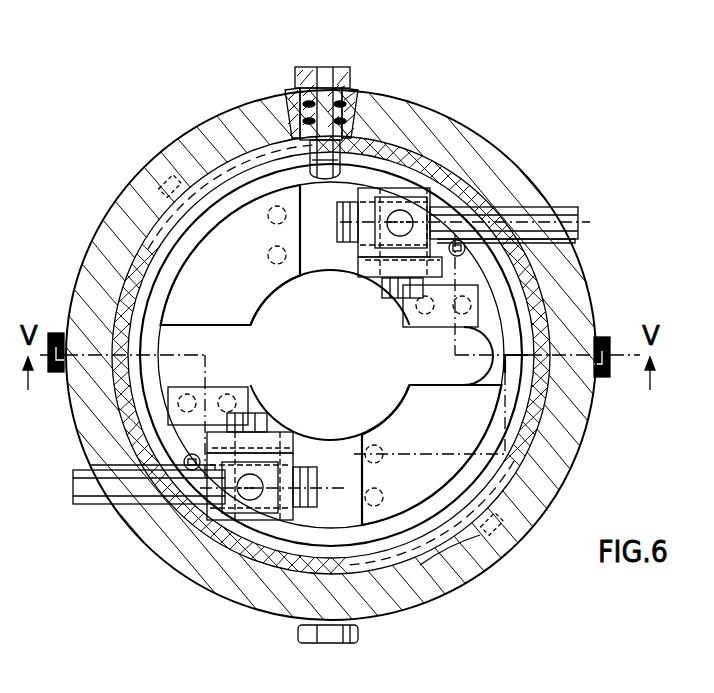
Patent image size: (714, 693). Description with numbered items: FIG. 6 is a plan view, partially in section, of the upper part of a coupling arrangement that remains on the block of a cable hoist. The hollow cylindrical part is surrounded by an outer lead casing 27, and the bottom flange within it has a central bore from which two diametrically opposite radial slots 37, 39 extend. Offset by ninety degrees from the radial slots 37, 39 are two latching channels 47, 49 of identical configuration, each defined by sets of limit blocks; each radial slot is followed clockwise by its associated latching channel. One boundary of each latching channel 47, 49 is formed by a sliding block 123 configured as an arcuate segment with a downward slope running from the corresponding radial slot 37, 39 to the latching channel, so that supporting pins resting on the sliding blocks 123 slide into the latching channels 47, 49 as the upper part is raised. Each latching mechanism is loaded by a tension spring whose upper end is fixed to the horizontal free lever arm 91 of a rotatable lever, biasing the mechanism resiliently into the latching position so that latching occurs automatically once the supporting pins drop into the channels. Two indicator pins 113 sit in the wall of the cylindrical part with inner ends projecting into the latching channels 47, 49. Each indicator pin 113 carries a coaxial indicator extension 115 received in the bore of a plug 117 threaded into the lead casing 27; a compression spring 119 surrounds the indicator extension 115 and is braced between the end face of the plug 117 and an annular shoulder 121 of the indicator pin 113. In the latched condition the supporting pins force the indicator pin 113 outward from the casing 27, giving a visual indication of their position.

The lead casing 27 is at (438, 116).
The radial slot 37 is at (110, 315).
The radial slot 39 is at (574, 393).
The latching channel 47 is at (240, 104).
The latching channel 49 is at (455, 572).
The horizontal free lever arm 91 is at (559, 217).
The indicator pin 113 is at (313, 200).
The indicator extension 115 is at (346, 68).
The plug 117 is at (303, 65).
The compression spring 119 is at (297, 98).
The annular shoulder 121 is at (290, 108).
The sliding block 123 is at (200, 267).